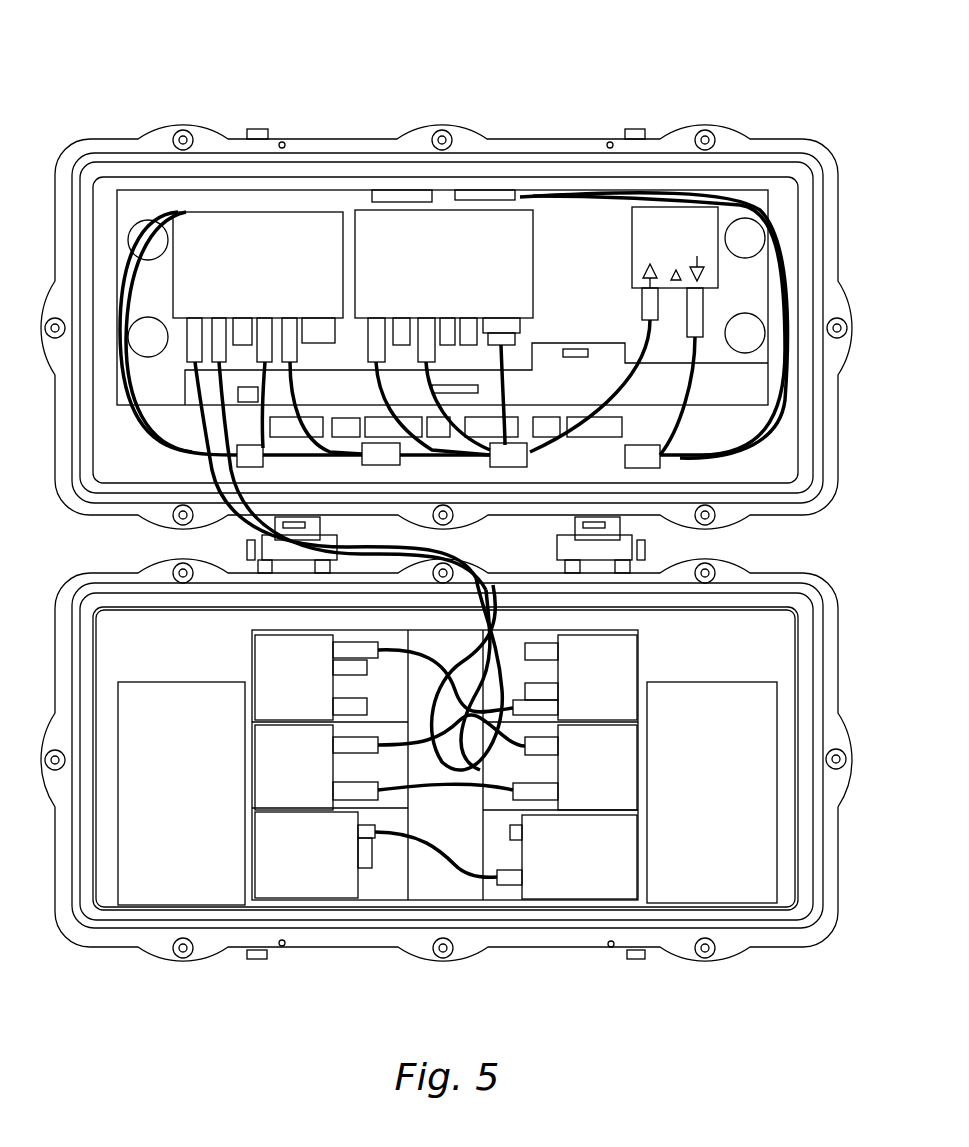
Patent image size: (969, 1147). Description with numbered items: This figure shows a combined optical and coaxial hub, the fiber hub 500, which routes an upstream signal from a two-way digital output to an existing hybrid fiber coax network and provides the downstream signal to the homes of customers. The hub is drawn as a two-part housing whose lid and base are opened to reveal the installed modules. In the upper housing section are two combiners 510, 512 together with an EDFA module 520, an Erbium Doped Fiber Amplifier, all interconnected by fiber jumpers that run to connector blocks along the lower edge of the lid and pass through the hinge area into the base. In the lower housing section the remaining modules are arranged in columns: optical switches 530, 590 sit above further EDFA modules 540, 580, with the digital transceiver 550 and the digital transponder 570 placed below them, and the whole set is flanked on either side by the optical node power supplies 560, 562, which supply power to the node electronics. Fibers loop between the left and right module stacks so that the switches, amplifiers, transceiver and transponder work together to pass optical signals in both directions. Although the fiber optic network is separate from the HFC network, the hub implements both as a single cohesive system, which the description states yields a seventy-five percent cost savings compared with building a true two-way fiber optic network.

The fiber hub 500 is at (224, 56).
The combiner 510 is at (258, 214).
The combiner 512 is at (444, 214).
The EDFA module 520 is at (640, 272).
The optical switch 530 is at (445, 758).
The EDFA module 540 is at (181, 775).
The digital transceiver 550 is at (315, 901).
The optical node power supply 560 is at (296, 816).
The optical node power supply 562 is at (660, 812).
The digital transponder 570 is at (567, 911).
The EDFA module 580 is at (618, 790).
The optical switch 590 is at (712, 761).